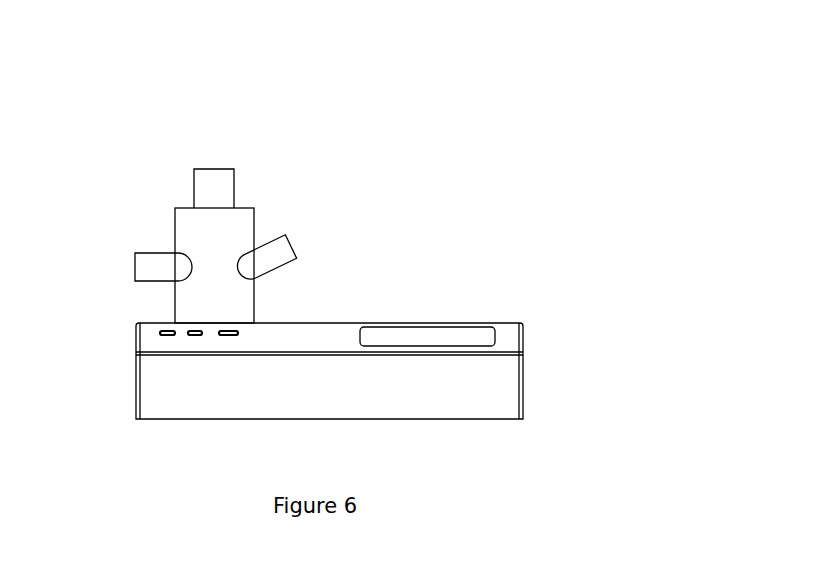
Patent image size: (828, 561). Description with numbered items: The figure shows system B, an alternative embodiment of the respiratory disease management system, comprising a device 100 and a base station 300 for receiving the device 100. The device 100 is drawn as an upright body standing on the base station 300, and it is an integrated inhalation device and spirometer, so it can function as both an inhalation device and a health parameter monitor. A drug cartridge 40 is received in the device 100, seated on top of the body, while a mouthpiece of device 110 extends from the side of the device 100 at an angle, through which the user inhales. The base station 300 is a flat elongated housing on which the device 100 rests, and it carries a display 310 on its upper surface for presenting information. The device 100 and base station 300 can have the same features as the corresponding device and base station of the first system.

The system B is at (124, 140).
The drug cartridge 40 is at (217, 180).
The device 100 is at (230, 247).
The mouthpiece of device 110 is at (290, 248).
The base station 300 is at (518, 383).
The display 310 is at (467, 333).